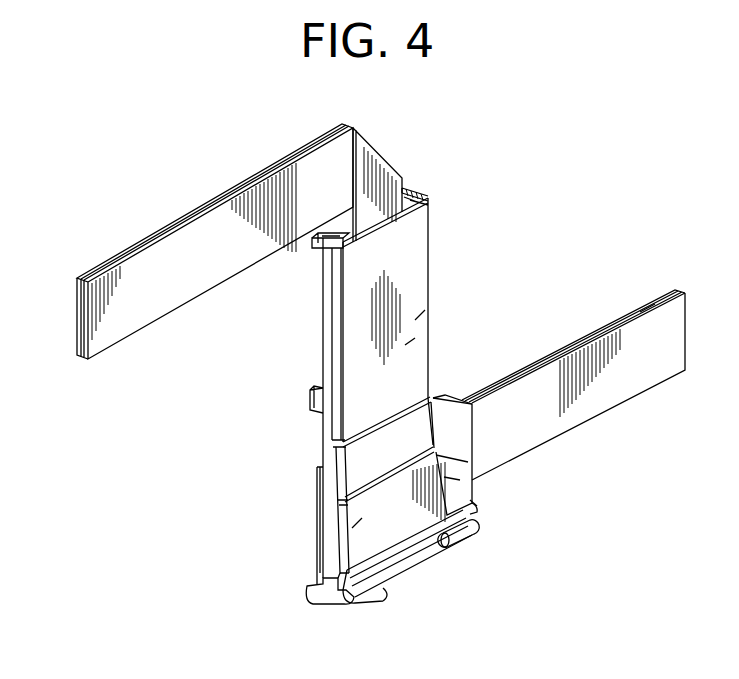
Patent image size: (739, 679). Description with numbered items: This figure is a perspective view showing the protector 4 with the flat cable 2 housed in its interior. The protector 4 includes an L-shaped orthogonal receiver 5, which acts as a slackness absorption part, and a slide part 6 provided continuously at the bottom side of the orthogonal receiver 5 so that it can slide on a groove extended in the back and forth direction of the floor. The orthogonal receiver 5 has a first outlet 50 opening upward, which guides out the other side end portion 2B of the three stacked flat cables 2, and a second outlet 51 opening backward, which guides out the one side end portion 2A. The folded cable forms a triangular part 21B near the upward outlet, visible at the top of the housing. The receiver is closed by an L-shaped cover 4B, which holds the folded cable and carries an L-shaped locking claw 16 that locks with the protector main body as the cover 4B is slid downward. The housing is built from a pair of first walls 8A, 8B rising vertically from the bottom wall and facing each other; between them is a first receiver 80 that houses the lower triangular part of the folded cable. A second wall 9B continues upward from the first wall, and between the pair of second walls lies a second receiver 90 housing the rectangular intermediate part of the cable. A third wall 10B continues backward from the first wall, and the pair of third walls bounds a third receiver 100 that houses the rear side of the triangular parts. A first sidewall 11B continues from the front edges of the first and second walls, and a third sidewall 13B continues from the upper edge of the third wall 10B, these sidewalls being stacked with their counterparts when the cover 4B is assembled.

The flat cable 2 is at (612, 325).
The one side end portion of the flat cables 2A is at (646, 306).
The other side end portion of the flat cables 2B is at (90, 278).
The protector 4 is at (421, 188).
The cover 4B is at (410, 285).
The orthogonal receiver 5 is at (425, 315).
The slide part 6 is at (422, 568).
The first wall 8A is at (316, 509).
The first wall 8B is at (371, 536).
The second wall 9B is at (413, 372).
The third wall 10B is at (452, 456).
The first sidewall 11B is at (322, 327).
The third sidewall 13B is at (442, 403).
The locking claw 16 is at (312, 243).
The triangular part 21B is at (372, 167).
The first outlet 50 is at (429, 198).
The second outlet 51 is at (476, 504).
The first receiver 80 is at (350, 530).
The second receiver 90 is at (410, 342).
The third receiver 100 is at (447, 475).